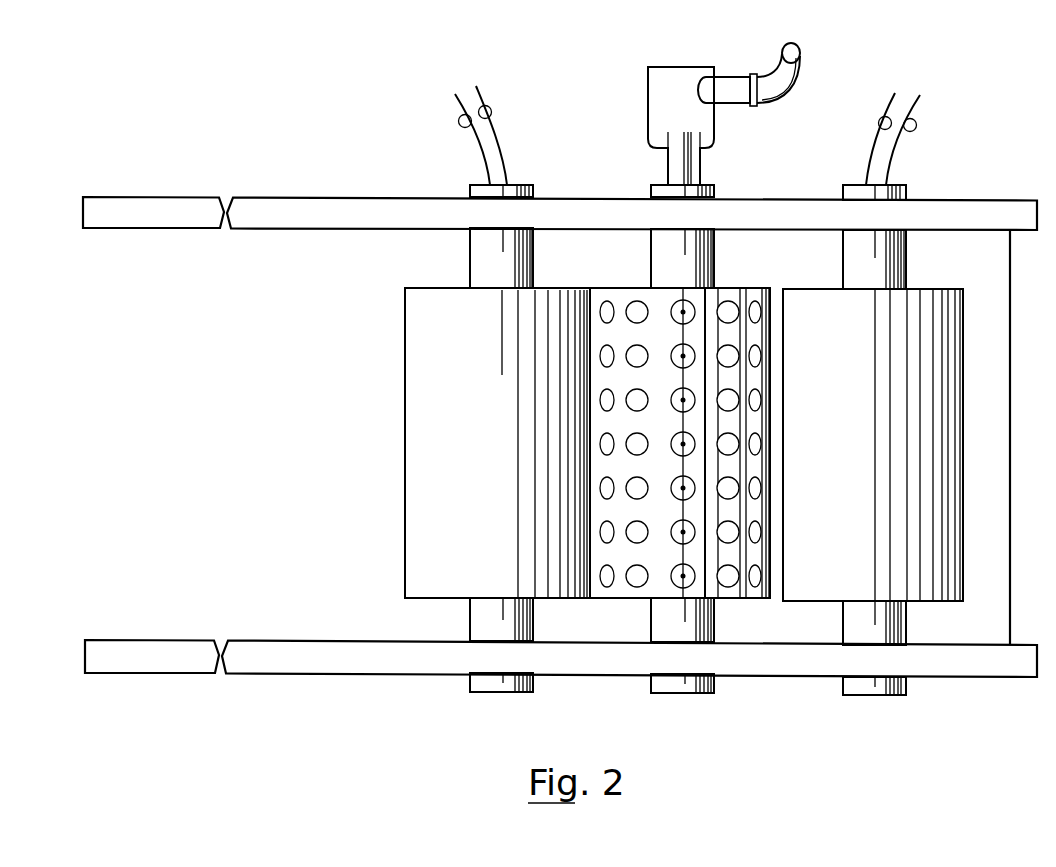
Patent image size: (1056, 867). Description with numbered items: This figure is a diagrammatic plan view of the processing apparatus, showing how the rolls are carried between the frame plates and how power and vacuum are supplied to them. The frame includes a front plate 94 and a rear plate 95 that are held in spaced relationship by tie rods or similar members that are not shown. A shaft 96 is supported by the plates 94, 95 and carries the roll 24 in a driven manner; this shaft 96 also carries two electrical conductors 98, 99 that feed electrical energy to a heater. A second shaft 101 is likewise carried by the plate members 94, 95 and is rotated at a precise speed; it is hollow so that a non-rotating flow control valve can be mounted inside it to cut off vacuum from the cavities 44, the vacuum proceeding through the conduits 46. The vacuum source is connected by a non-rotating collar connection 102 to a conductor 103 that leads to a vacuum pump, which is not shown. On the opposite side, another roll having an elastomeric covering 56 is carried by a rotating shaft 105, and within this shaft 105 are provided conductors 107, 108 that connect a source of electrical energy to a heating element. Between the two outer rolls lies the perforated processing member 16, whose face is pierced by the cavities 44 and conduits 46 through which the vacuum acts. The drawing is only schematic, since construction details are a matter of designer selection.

The perforated plate 16 is at (600, 290).
The roll 24 is at (823, 435).
The cavities 44 is at (728, 305).
The conduits 46 is at (683, 312).
The elastomeric covering 56 is at (420, 380).
The front plate 94 is at (333, 674).
The rear plate 95 is at (190, 228).
The shaft 96 is at (872, 695).
The electrical conductor 98 is at (893, 105).
The electrical conductor 99 is at (915, 103).
The shaft 101 is at (692, 693).
The non-rotating collar connection 102 is at (655, 90).
The conductor 103 is at (776, 61).
The rotating shaft 105 is at (510, 692).
The conductor 107 is at (460, 104).
The conductor 108 is at (488, 101).